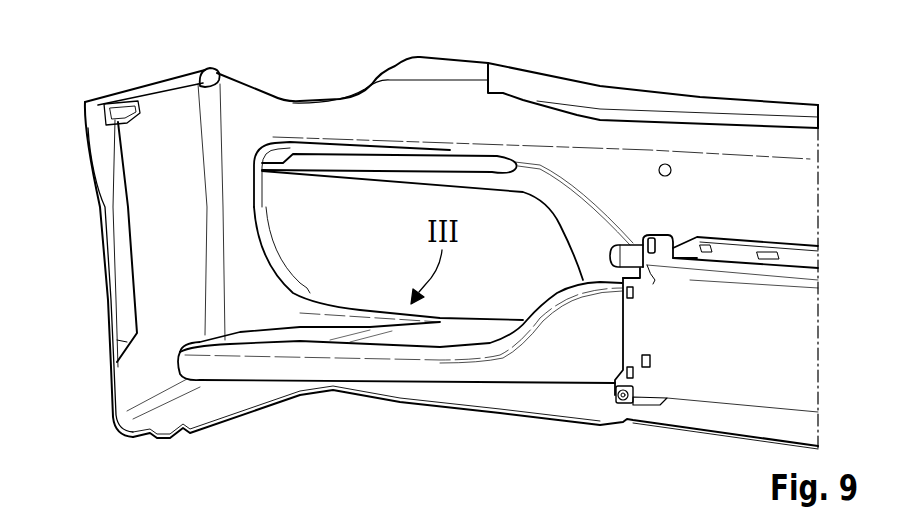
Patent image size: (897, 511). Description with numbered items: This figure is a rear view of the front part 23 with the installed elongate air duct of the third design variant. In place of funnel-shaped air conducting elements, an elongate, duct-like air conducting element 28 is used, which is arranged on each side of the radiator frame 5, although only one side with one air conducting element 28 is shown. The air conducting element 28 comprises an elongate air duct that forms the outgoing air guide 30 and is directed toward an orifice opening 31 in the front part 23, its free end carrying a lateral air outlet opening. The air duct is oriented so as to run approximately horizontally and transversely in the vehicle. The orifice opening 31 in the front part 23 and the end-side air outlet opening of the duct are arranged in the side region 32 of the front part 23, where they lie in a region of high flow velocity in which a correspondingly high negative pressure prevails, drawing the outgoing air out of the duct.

The radiator frame 5 is at (788, 355).
The front part 23 is at (638, 98).
The air conducting element 28 is at (380, 370).
The outgoing air guide 30 is at (444, 385).
The orifice opening 31 is at (86, 367).
The side region 32 is at (110, 287).